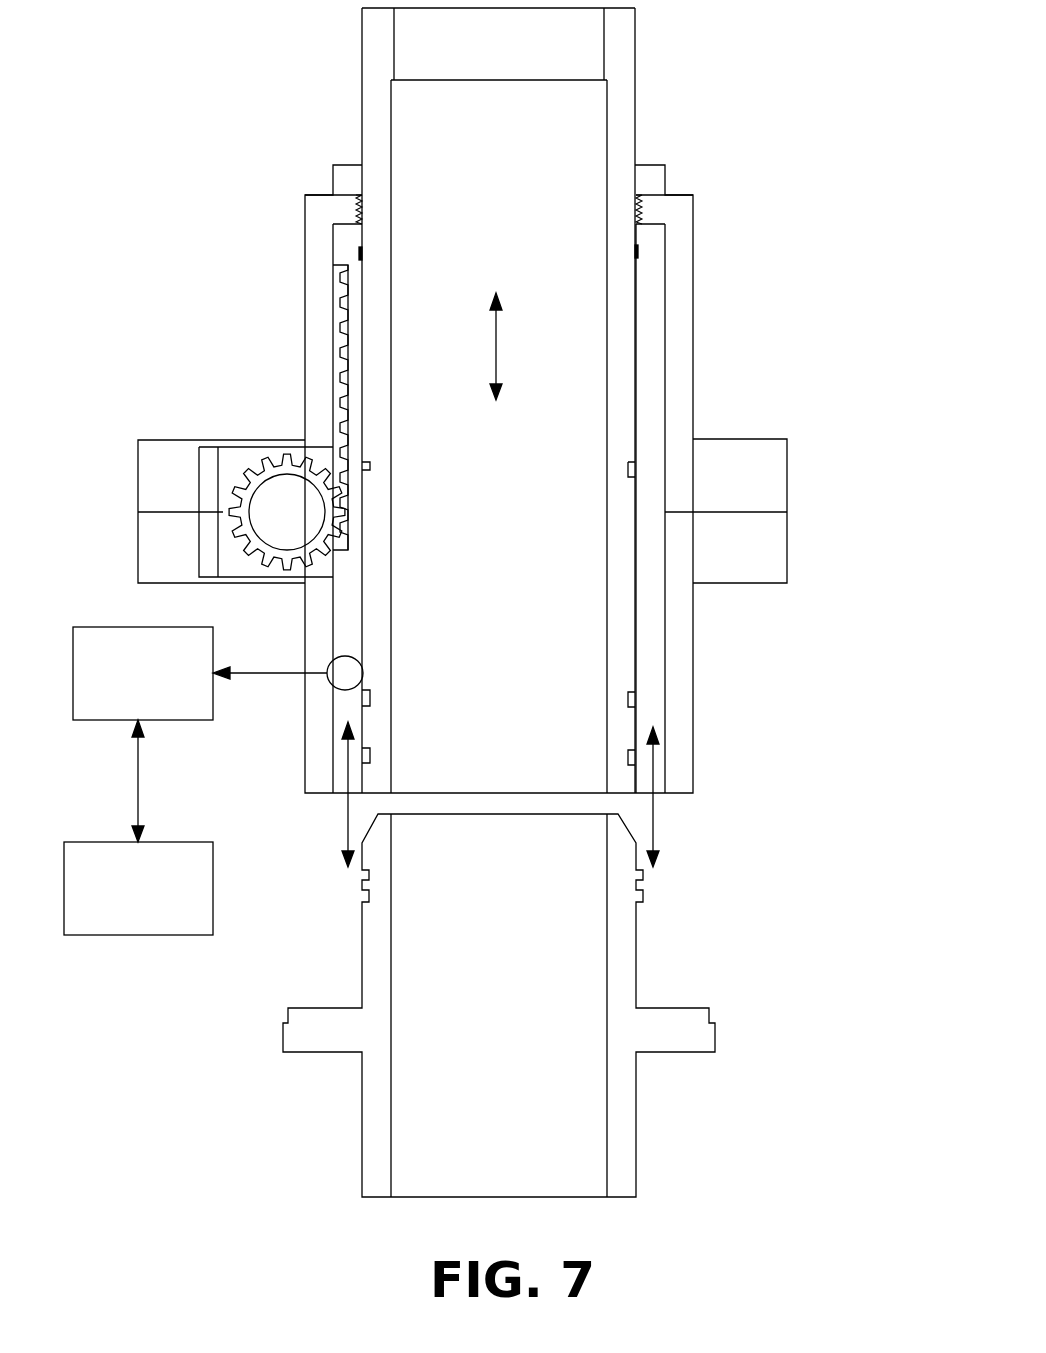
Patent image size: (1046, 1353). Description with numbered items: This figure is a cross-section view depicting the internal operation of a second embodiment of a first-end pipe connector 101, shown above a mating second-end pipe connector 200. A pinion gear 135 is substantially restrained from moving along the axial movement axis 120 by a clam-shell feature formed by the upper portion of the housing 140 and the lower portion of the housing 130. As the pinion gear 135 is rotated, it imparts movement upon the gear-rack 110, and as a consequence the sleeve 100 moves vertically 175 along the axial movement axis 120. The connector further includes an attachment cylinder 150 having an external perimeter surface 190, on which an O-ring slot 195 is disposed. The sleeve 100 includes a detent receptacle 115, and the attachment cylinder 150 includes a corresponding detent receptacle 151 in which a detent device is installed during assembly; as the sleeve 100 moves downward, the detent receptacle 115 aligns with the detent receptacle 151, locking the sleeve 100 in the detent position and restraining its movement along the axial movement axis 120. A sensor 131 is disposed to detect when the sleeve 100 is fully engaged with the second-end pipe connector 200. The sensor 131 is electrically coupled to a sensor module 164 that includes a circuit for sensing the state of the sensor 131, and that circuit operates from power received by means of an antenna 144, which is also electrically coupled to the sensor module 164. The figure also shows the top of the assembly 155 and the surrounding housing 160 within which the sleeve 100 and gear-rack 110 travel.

The first-end pipe connector 101 is at (753, 168).
The top cap 155 is at (604, 10).
The attachment cylinder 150 is at (392, 197).
The housing 160 is at (392, 790).
The upper portion of the housing 140 is at (787, 440).
The lower portion of the housing 130 is at (787, 583).
The pinion gear 135 is at (268, 457).
The sleeve 100 is at (363, 276).
The gear-rack 110 is at (349, 312).
The detent receptacle 115 is at (362, 251).
The axial movement axis 120 is at (500, 362).
The detent receptacle 151 is at (372, 465).
The O-ring slot 195 is at (628, 692).
The external perimeter surface 190 is at (637, 663).
The vertical movement 175 is at (655, 758).
The sensor 131 is at (363, 668).
The sensor module 164 is at (74, 720).
The antenna 144 is at (133, 935).
The second-end pipe connector 200 is at (637, 946).